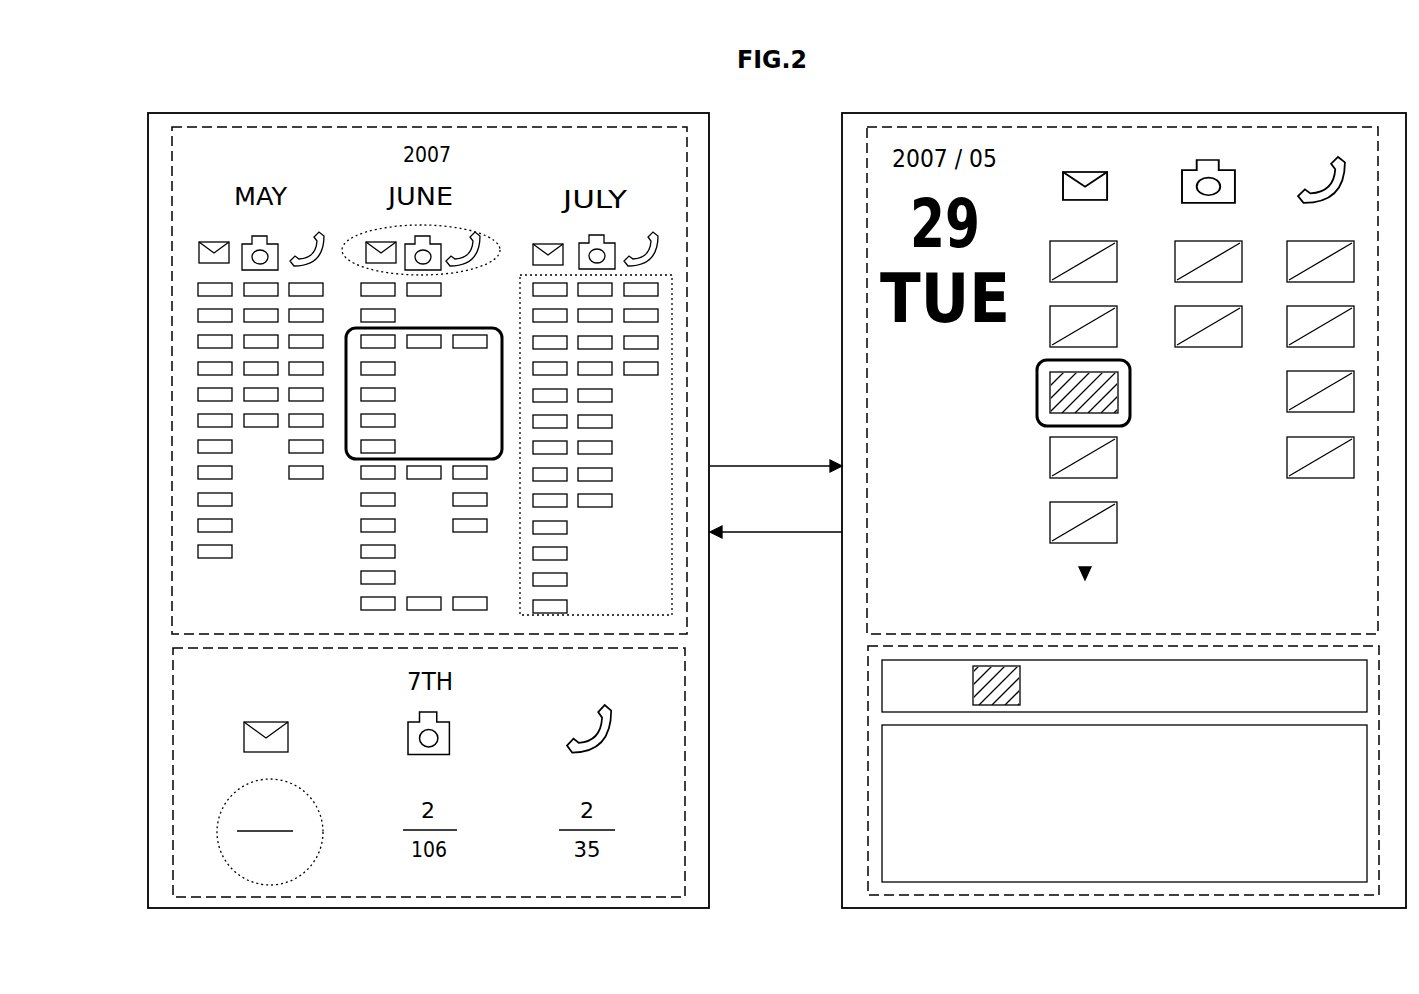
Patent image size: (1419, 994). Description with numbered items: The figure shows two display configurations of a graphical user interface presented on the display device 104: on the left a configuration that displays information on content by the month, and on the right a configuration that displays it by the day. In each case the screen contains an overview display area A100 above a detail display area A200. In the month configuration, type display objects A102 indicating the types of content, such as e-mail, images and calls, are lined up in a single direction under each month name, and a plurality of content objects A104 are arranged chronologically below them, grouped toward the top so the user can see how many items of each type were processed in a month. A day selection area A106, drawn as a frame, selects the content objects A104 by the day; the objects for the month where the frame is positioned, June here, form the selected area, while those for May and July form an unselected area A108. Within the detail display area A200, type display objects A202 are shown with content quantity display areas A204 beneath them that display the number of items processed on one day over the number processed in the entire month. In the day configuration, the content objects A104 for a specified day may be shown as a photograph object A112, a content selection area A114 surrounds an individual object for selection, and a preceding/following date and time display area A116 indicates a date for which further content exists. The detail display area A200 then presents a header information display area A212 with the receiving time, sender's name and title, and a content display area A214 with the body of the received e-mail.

The display device 104 is at (201, 113).
The overview display area A100 is at (687, 196).
The type display objects A102 is at (465, 228).
The content objects A104 is at (232, 549).
The day selection area A106 is at (490, 306).
The unselected area A108 is at (672, 378).
The photograph object A112 is at (1130, 393).
The content selection area A114 is at (1037, 393).
The preceding/following date and time display area A116 is at (1133, 591).
The detail display area A200 is at (683, 739).
The type display objects A202 is at (263, 720).
The content quantity display areas A204 is at (306, 790).
The header information display area A212 is at (882, 683).
The content display area A214 is at (882, 853).